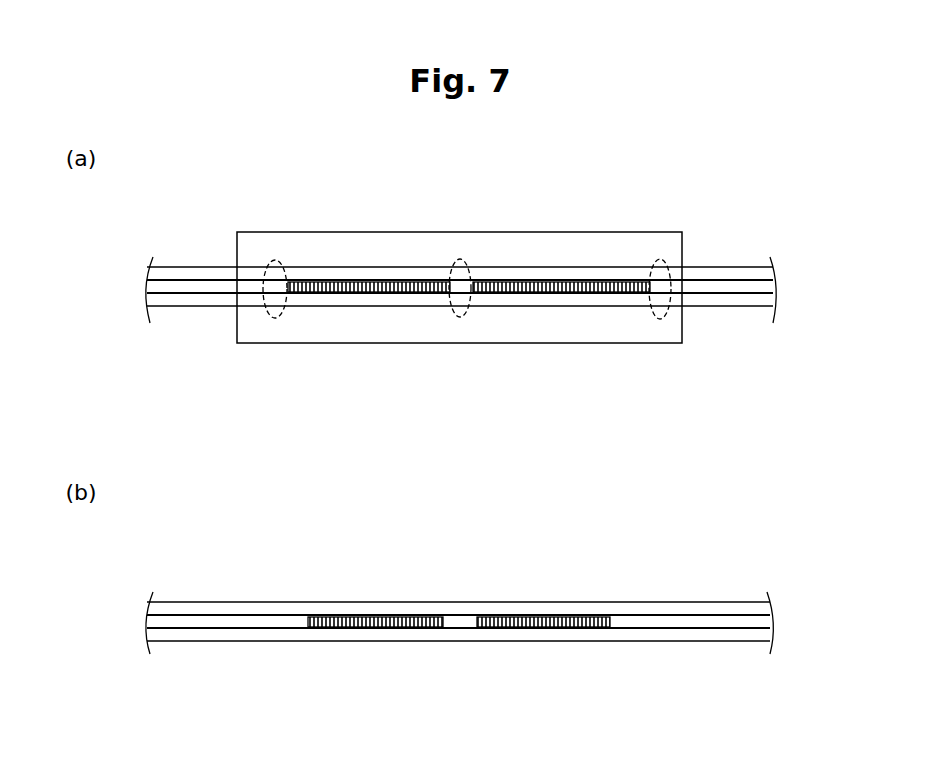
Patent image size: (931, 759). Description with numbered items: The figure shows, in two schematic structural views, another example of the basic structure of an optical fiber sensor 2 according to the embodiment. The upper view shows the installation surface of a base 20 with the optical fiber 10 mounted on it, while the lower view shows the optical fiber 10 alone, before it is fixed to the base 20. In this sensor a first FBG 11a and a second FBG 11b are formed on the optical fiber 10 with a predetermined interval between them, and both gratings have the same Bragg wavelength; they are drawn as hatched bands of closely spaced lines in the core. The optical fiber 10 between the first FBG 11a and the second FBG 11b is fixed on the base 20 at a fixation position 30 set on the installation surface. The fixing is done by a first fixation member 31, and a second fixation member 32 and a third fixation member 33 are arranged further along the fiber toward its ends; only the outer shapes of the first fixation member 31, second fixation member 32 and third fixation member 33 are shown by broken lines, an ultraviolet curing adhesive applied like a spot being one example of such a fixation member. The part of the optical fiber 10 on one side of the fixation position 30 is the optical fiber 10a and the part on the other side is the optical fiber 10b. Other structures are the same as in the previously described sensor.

The optical fiber sensor 2 is at (733, 191).
The optical fiber 10 is at (747, 266).
The optical fiber (one side) 10a is at (727, 309).
The optical fiber (other side) 10b is at (207, 309).
The first FBG 11a is at (537, 294).
The second FBG 11b is at (368, 294).
The base 20 is at (247, 231).
The fixation position 30 is at (459, 323).
The first fixation member 31 is at (461, 259).
The second fixation member 32 is at (661, 259).
The third fixation member 33 is at (276, 259).